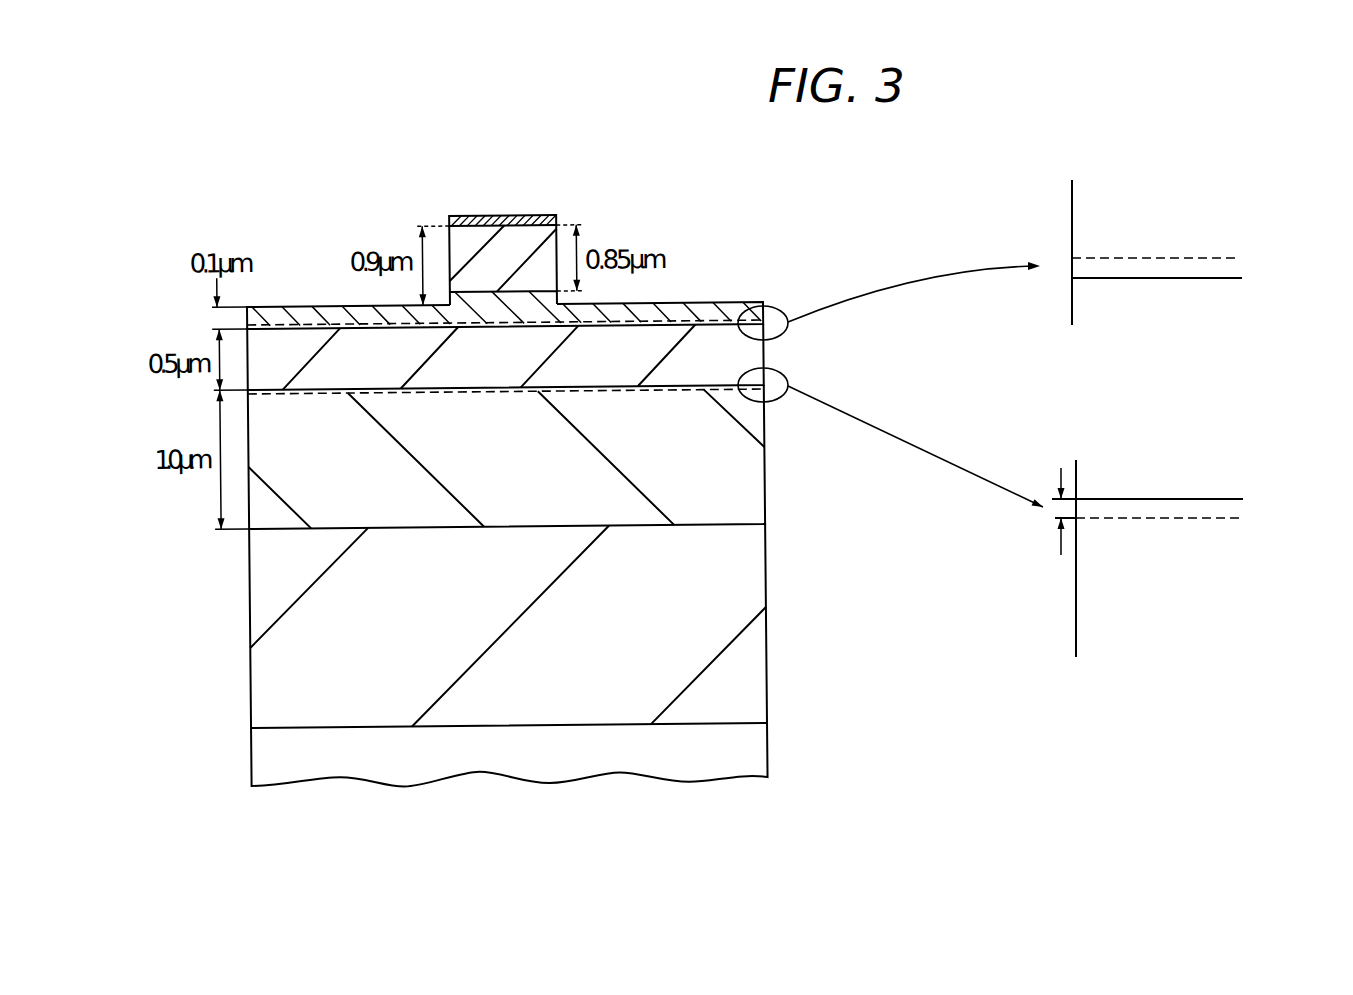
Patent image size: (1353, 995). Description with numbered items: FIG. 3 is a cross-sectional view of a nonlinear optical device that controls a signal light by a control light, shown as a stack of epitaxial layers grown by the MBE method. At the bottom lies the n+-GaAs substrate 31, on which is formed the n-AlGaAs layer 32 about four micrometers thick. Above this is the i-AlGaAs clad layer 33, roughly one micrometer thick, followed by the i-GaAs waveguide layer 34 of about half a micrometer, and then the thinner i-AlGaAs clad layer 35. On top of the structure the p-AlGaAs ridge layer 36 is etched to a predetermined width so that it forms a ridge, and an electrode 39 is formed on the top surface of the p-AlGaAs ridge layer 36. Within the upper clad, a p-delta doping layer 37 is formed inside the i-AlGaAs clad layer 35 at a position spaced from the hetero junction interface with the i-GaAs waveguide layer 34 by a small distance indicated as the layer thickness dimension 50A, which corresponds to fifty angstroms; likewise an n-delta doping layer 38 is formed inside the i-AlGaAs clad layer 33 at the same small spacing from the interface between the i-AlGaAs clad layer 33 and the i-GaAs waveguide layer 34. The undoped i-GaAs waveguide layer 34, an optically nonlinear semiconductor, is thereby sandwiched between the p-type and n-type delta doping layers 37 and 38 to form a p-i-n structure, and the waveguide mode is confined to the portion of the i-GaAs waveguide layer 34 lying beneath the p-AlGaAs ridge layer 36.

The n+-GaAs substrate 31 is at (750, 755).
The n-AlGaAs layer 32 is at (748, 651).
The i-AlGaAs clad layer 33 is at (745, 483).
The i-GaAs waveguide layer 34 is at (745, 354).
The i-AlGaAs clad layer 35 is at (702, 307).
The p-AlGaAs ridge layer 36 is at (532, 245).
The p-delta doping layer 37 is at (1248, 258).
The n-delta doping layer 38 is at (1250, 518).
The electrode 39 is at (506, 218).
The layer thickness dimension 50A is at (1065, 490).